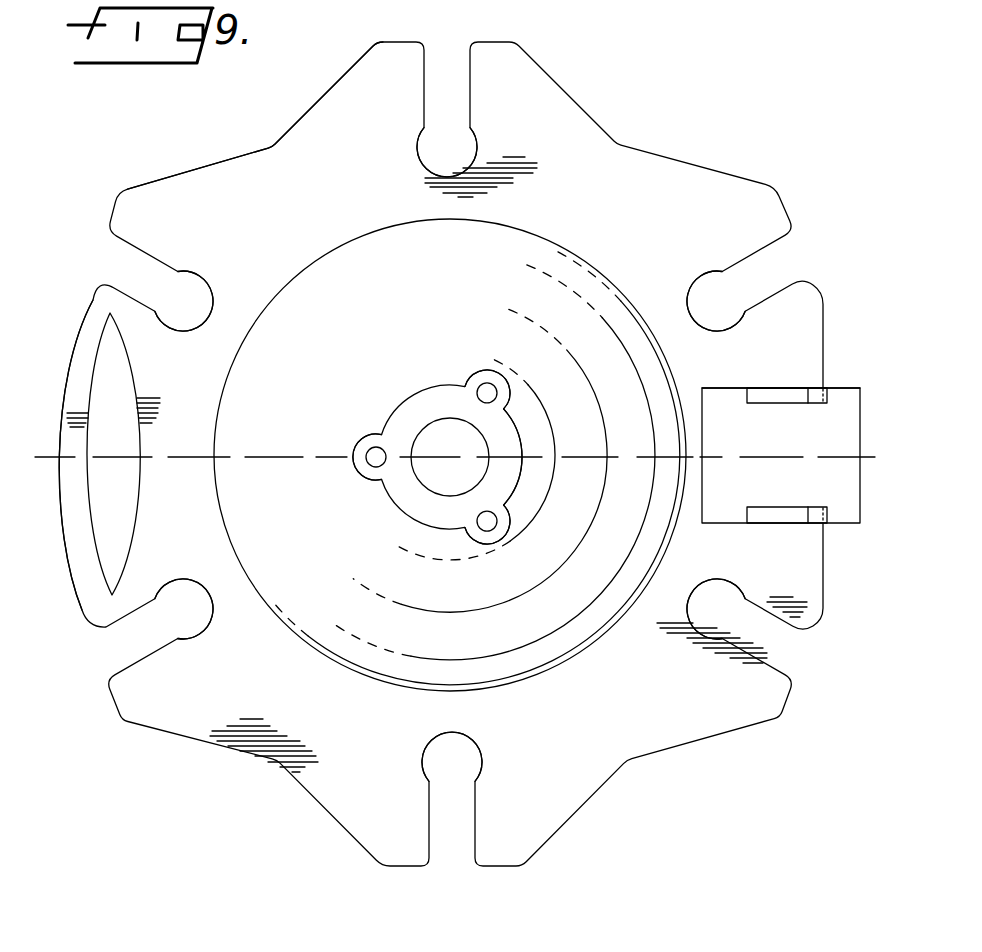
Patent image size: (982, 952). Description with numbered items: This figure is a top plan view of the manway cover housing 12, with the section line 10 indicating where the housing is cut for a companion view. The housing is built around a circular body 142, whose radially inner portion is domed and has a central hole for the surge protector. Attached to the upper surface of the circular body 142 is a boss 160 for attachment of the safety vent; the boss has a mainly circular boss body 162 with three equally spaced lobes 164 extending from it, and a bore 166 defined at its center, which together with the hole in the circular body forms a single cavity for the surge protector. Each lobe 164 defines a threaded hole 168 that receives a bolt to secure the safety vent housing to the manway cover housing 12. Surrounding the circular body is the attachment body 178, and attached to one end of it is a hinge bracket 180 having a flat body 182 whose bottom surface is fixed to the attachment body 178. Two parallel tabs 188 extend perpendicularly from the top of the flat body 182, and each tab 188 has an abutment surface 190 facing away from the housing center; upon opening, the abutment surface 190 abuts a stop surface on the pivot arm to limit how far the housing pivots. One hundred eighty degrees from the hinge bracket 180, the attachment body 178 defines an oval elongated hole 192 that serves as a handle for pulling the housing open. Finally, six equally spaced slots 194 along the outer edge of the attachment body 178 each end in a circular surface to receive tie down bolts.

The section line 10 is at (33, 400).
The manway cover housing 12 is at (680, 136).
The circular body 142 is at (513, 249).
The boss 160 is at (419, 385).
The boss body 162 is at (518, 476).
The lobes 164 is at (490, 348).
The bore 166 is at (470, 484).
The threaded hole 168 is at (488, 392).
The attachment body 178 is at (305, 153).
The hinge bracket 180 is at (737, 522).
The flat body 182 is at (735, 362).
The tabs 188 is at (800, 366).
The abutment surface 190 is at (835, 392).
The elongated hole 192 is at (98, 560).
The slots 194 is at (450, 57).